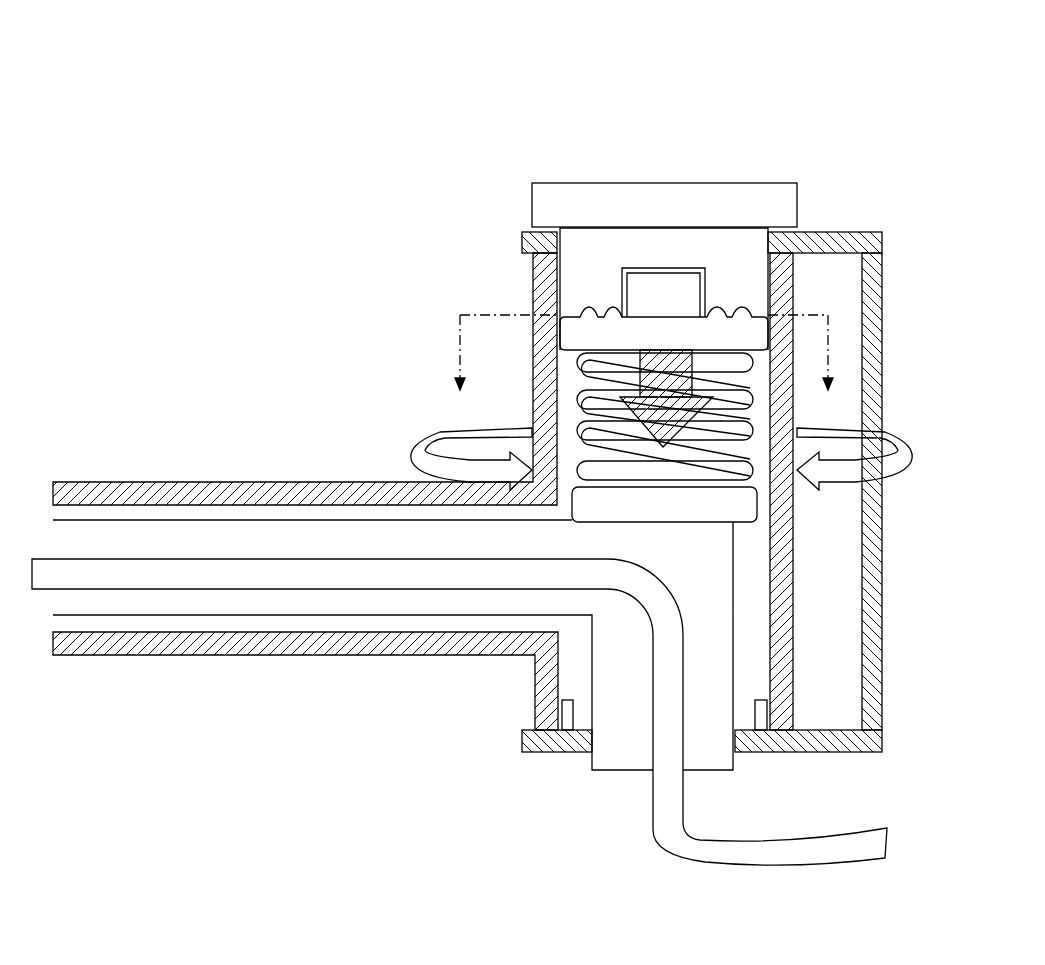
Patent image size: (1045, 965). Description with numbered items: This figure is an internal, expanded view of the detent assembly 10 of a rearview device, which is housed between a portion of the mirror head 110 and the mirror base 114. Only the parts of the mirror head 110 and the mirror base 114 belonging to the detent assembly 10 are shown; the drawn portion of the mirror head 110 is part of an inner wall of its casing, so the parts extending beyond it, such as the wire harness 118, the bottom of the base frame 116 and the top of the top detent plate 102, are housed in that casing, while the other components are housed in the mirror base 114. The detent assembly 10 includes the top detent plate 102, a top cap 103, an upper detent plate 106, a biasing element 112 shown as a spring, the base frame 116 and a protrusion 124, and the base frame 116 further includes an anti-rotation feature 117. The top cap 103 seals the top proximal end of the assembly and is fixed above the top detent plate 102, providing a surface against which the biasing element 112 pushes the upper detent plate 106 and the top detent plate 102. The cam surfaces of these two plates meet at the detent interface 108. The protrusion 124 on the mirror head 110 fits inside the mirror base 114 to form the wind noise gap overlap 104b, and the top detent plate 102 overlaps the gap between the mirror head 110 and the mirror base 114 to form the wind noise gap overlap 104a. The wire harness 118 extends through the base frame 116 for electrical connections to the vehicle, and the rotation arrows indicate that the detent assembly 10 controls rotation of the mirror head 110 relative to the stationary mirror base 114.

The detent assembly 10 is at (235, 58).
The top detent plate 102 is at (600, 240).
The top cap 103 is at (665, 183).
The wind noise gap overlap 104a is at (533, 258).
The wind noise gap overlap 104b is at (540, 730).
The upper detent plate 106 is at (575, 333).
The detent interface 108 is at (735, 317).
The mirror head 110 is at (848, 232).
The biasing element 112 is at (747, 458).
The mirror base 114 is at (250, 482).
The base frame 116 is at (632, 533).
The anti-rotation feature 117 is at (643, 300).
The wire harness 118 is at (655, 822).
The protrusion 124 is at (567, 722).